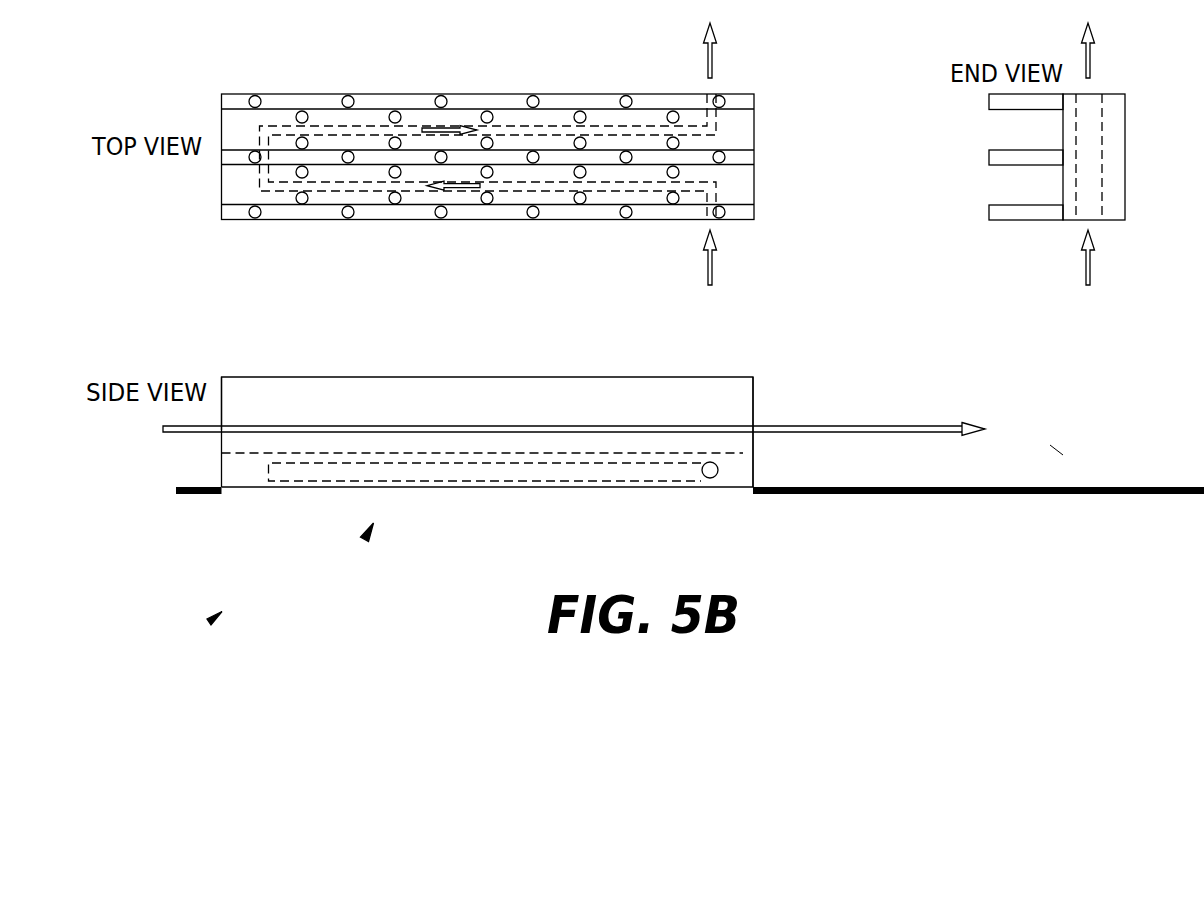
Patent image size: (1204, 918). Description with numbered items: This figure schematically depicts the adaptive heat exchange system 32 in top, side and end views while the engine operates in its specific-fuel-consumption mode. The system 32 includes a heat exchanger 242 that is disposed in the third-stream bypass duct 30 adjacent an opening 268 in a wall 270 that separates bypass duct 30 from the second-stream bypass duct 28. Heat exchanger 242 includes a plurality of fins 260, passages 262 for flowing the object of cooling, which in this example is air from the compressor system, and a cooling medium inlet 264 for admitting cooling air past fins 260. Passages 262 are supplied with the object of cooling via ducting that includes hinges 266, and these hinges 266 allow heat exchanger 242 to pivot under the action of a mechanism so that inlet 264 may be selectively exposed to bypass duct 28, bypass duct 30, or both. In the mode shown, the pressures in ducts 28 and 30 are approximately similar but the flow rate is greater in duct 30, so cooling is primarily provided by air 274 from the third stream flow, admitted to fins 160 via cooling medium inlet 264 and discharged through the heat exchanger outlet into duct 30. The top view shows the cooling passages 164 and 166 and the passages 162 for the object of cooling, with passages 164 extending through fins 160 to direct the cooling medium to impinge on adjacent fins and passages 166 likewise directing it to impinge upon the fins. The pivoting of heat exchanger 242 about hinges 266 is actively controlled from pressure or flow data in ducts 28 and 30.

The bypass duct 28 is at (993, 530).
The bypass duct 30 is at (1063, 455).
The heat exchange system 32 is at (209, 622).
The fins 160 is at (727, 153).
The passages 162 is at (410, 130).
The passages 164 is at (443, 96).
The passages 166 is at (493, 112).
The heat exchanger 242 is at (753, 400).
The fins 260 is at (560, 101).
The passages 262 is at (397, 186).
The cooling medium inlet 264 is at (221, 387).
The hinges 266 is at (725, 478).
The opening 268 is at (366, 541).
The wall 270 is at (813, 496).
The air 274 is at (907, 423).